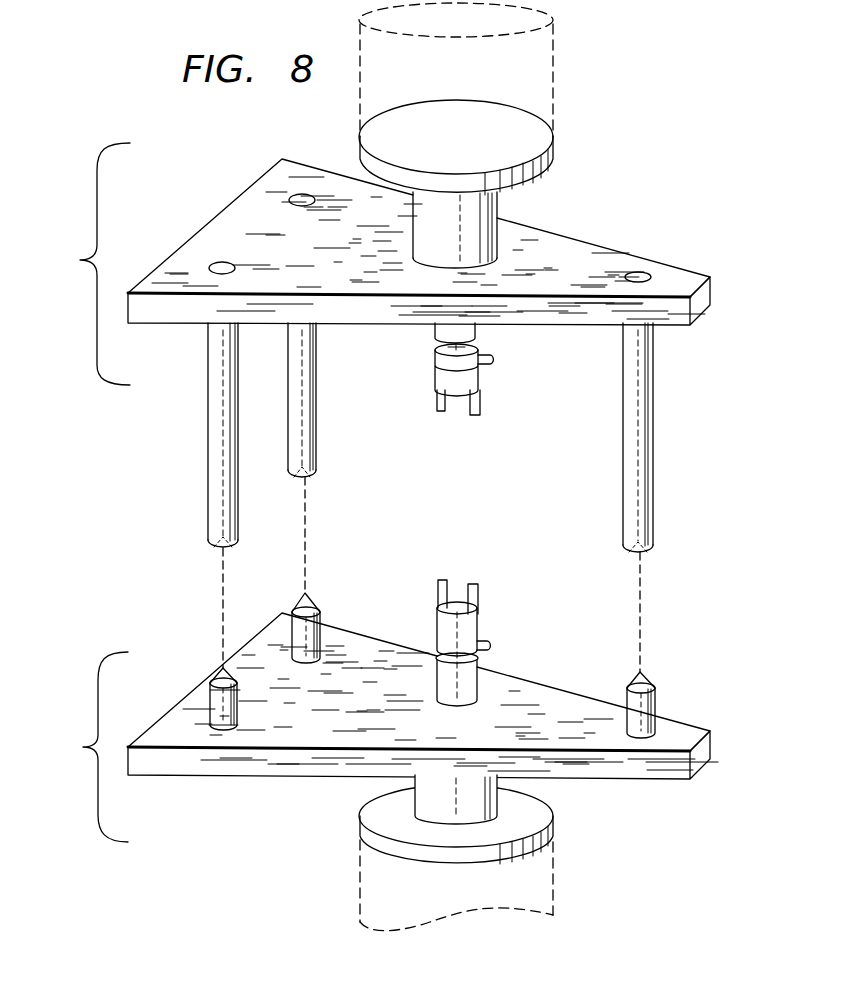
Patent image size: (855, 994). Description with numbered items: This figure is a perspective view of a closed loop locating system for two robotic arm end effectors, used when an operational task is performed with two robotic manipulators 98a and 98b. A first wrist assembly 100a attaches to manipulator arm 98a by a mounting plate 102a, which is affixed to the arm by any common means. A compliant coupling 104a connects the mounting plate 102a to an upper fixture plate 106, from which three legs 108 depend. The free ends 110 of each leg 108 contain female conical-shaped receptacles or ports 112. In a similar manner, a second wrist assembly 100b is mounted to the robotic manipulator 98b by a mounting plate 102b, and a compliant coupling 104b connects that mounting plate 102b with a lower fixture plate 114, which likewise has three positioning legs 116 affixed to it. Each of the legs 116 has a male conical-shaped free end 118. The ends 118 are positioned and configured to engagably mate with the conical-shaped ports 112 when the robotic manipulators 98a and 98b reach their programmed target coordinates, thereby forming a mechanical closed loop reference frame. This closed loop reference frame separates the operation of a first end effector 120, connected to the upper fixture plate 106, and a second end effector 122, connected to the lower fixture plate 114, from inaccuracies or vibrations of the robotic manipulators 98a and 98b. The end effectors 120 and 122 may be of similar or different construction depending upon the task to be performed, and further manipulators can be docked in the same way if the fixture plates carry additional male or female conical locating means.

The robotic manipulator 98a is at (553, 80).
The robotic manipulator 98b is at (550, 877).
The first wrist assembly 100a is at (80, 260).
The second wrist assembly 100b is at (83, 747).
The mounting plate 102a is at (553, 160).
The mounting plate 102b is at (368, 832).
The compliant coupling 104a is at (497, 210).
The compliant coupling 104b is at (415, 780).
The upper fixture plate 106 is at (618, 267).
The legs 108 is at (290, 398).
The free ends 110 is at (227, 520).
The conical-shaped ports 112 is at (294, 480).
The lower fixture plate 114 is at (220, 762).
The positioning legs 116 is at (290, 627).
The male conical-shaped free end 118 is at (317, 610).
The first end effector 120 is at (492, 383).
The second end effector 122 is at (488, 632).